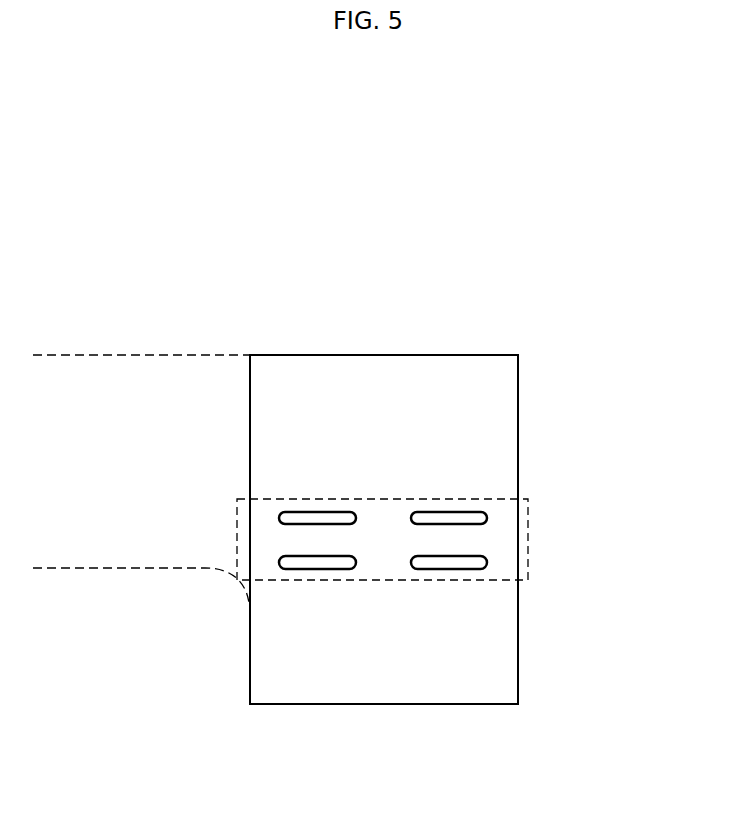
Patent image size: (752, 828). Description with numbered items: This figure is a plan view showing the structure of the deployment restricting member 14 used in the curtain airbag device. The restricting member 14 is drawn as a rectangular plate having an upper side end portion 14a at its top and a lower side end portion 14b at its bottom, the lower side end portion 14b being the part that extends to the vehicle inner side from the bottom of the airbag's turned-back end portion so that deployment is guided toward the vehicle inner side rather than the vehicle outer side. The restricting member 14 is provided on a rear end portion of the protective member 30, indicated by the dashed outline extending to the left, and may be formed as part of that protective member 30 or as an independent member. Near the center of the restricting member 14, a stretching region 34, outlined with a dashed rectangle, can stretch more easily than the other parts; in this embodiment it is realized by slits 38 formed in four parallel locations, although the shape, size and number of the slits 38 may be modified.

The deployment restricting member 14 is at (520, 427).
The upper side end portion 14a is at (430, 356).
The lower side end portion 14b is at (400, 706).
The protective member 30 is at (160, 347).
The stretching region 34 is at (527, 561).
The slits 38 is at (488, 519).